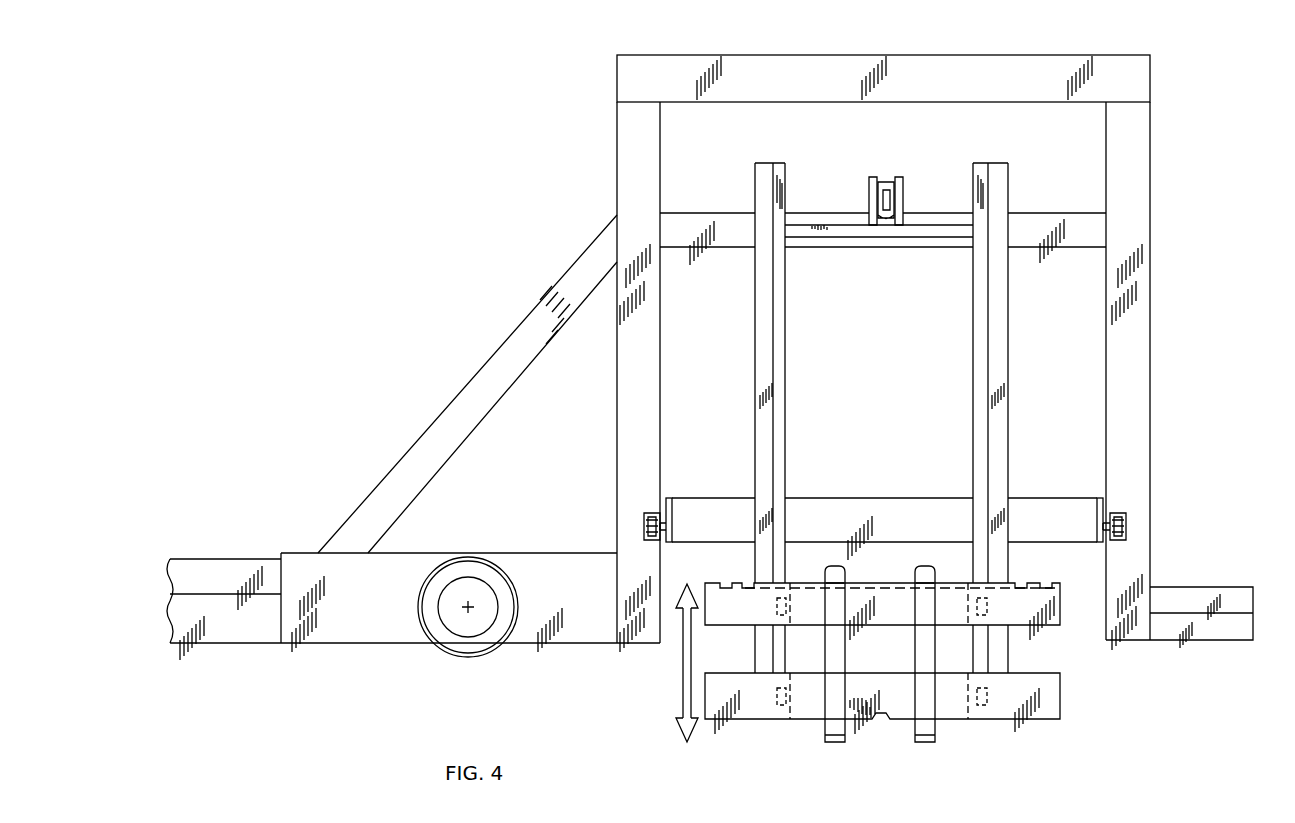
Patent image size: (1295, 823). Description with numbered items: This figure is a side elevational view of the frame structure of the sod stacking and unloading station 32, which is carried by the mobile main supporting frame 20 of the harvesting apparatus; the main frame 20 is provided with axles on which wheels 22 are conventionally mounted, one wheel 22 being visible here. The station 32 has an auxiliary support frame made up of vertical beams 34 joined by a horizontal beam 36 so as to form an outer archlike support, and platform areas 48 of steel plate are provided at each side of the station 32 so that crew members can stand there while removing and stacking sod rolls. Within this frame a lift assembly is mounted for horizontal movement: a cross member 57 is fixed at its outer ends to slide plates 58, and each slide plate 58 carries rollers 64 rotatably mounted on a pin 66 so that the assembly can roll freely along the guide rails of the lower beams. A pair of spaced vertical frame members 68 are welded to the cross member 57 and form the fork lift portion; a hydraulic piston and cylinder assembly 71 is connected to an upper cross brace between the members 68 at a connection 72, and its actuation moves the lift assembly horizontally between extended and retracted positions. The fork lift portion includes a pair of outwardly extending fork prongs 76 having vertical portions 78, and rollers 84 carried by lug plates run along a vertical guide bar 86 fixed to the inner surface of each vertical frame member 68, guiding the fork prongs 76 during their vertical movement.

The main supporting frame 20 is at (283, 509).
The wheel 22 is at (455, 655).
The stacking and unloading station 32 is at (584, 146).
The vertical beam 34 is at (617, 372).
The horizontal beam 36 is at (905, 55).
The platform area 48 is at (557, 553).
The cross member 57 is at (813, 498).
The slide plate 58 is at (667, 498).
The roller 64 is at (652, 513).
The pin 66 is at (663, 532).
The vertical frame member 68 is at (755, 290).
The hydraulic piston and cylinder assembly 71 is at (880, 178).
The connection 72 is at (903, 182).
The fork prong 76 is at (832, 742).
The vertical portion 78 is at (832, 566).
The roller 84 is at (776, 618).
The vertical guide bar 86 is at (785, 310).